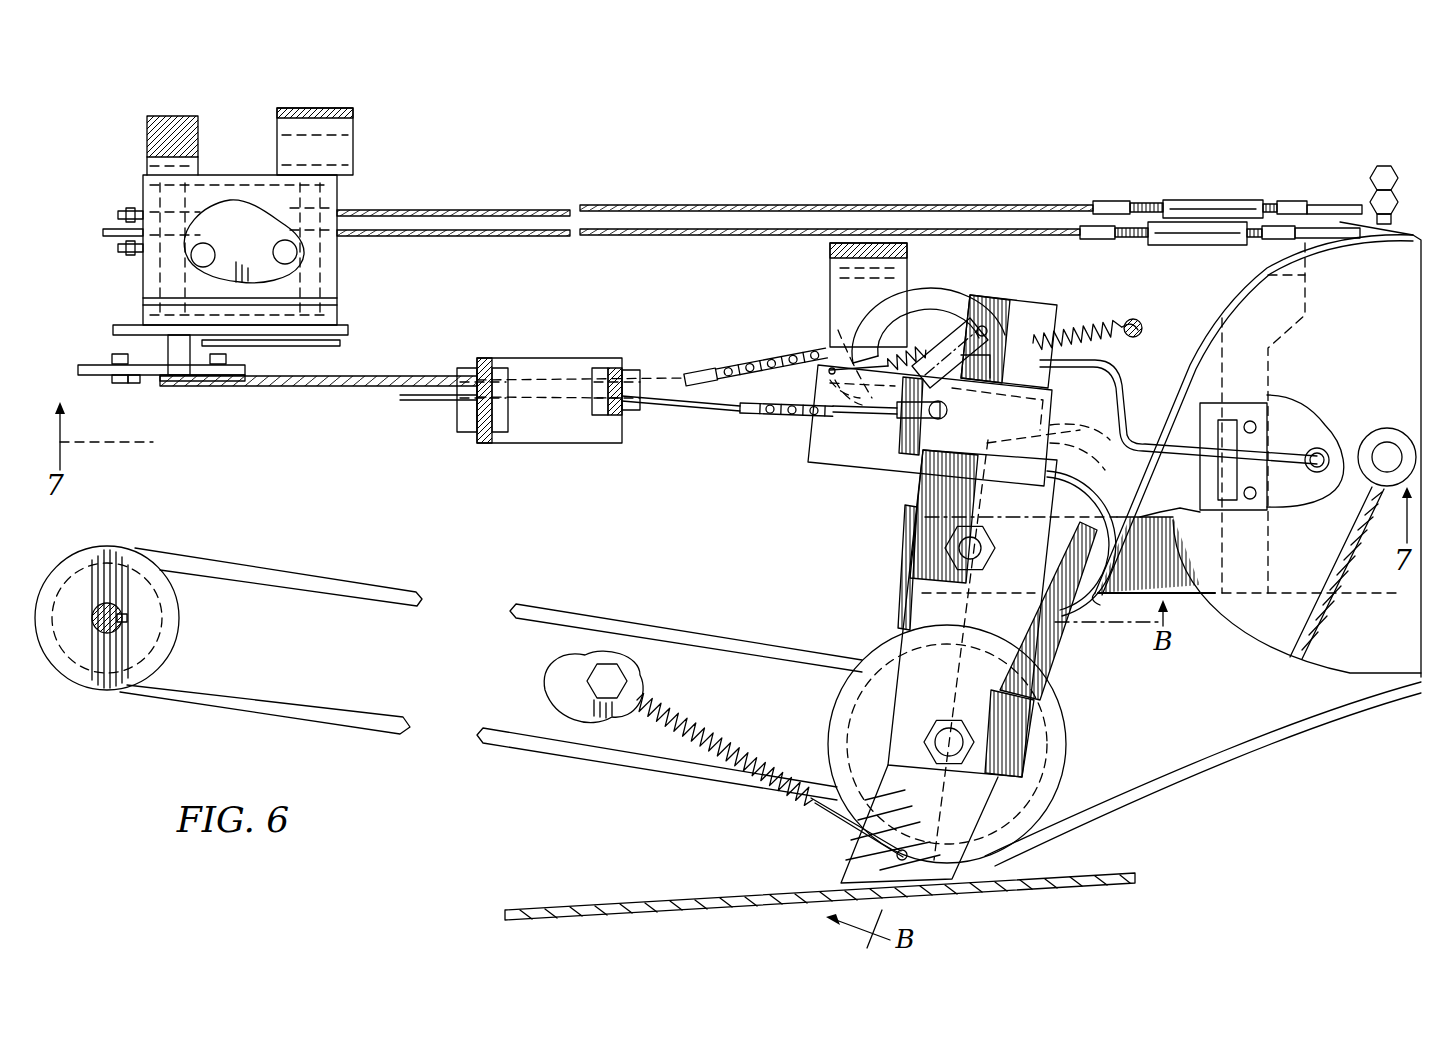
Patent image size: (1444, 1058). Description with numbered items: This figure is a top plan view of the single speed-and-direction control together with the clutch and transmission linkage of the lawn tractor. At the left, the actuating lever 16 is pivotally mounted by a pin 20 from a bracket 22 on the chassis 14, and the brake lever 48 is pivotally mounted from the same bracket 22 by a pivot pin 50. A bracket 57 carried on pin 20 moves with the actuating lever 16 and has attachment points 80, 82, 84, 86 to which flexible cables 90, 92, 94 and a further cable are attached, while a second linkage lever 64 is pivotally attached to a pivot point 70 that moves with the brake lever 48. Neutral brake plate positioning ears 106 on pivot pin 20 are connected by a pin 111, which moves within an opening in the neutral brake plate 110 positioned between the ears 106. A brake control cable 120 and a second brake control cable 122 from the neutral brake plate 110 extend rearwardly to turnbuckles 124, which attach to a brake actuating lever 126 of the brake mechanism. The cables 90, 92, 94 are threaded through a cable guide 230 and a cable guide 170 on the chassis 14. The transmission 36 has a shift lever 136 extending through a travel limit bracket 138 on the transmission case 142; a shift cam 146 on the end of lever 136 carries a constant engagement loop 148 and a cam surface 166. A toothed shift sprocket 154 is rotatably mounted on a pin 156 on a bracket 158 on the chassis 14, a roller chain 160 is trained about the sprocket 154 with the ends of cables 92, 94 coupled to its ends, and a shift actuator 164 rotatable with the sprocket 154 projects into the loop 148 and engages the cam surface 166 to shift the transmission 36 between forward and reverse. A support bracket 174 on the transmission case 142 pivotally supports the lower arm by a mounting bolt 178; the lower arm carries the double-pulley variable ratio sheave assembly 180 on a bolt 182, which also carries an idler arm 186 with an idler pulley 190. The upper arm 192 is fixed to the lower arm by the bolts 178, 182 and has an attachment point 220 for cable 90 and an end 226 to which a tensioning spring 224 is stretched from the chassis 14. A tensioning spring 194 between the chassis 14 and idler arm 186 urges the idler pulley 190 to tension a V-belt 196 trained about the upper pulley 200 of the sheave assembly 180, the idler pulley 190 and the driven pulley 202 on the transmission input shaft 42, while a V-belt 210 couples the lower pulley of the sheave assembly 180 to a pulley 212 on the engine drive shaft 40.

The chassis 14 is at (552, 425).
The actuating lever 16 is at (186, 100).
The pin 20 is at (137, 192).
The bracket 22 is at (330, 298).
The transmission 36 is at (1252, 305).
The engine drive shaft 40 is at (120, 612).
The input shaft 42 is at (1387, 445).
The brake lever 48 is at (325, 108).
The pivot pin 50 is at (300, 272).
The bracket 57 is at (98, 340).
The second linkage lever 64 is at (350, 330).
The pivot point 70 is at (312, 345).
The attachment point 80 is at (118, 383).
The attachment point 82 is at (136, 383).
The attachment point 84 is at (212, 378).
The attachment point 86 is at (225, 380).
The flexible cable 90 is at (180, 387).
The flexible cable 92 is at (285, 378).
The flexible cable 94 is at (728, 418).
The neutral brake plate positioning ears 106 is at (120, 213).
The neutral brake plate 110 is at (103, 232).
The pin 111 is at (137, 207).
The flexible brake control cable 120 is at (742, 206).
The flexible brake control cable 122 is at (782, 230).
The turnbuckles 124 is at (1218, 200).
The brake actuating lever 126 is at (1352, 218).
The shift lever 136 is at (1127, 392).
The travel limit bracket 138 is at (1268, 406).
The transmission case 142 is at (1343, 573).
The shift cam 146 is at (1028, 303).
The constant engagement loop 148 is at (927, 289).
The transmission shift sprocket 154 is at (848, 466).
The pin 156 is at (848, 338).
The bracket 158 is at (832, 302).
The roller chain 160 is at (752, 368).
The shift actuator 164 is at (955, 320).
The cam surface 166 is at (986, 325).
The cable guide 170 is at (630, 370).
The support bracket 174 is at (1183, 590).
The mounting bolt 178 is at (958, 551).
The double-pulley variable ratio sheave assembly 180 is at (806, 733).
The bolt 182 is at (965, 745).
The idler arm 186 is at (1062, 640).
The idler pulley 190 is at (1100, 594).
The upper arm 192 is at (922, 484).
The tensioning spring 194 is at (684, 720).
The V-belt 196 is at (1252, 758).
The upper pulley 200 is at (852, 699).
The driven pulley 202 is at (1288, 676).
The V-belt 210 is at (573, 616).
The pulley 212 is at (175, 636).
The attachment point 220 is at (948, 410).
The tensioning spring 224 is at (830, 352).
The end of arm 226 is at (830, 382).
The cable guide 230 is at (502, 368).